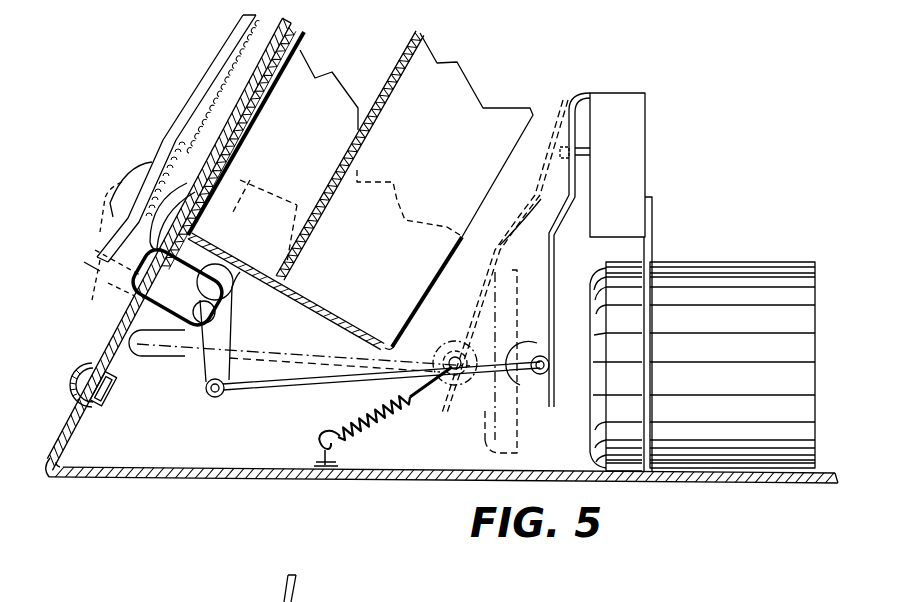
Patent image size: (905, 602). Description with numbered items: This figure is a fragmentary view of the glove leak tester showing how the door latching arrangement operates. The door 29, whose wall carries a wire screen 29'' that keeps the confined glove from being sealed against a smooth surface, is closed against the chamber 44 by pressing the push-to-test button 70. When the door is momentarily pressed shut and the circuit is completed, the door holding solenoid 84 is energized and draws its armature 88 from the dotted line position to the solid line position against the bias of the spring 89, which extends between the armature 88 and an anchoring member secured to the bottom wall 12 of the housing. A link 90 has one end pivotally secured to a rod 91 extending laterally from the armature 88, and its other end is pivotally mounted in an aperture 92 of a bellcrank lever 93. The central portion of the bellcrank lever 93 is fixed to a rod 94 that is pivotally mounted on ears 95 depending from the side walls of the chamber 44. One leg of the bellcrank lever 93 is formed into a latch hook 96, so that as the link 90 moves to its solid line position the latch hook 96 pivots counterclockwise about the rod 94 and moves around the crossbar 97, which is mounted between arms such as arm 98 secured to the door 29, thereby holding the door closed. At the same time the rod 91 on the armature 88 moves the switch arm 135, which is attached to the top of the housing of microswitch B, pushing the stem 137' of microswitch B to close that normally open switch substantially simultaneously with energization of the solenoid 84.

The bottom wall 12 is at (390, 474).
The door 29 is at (235, 108).
The wire screen 29'' is at (233, 130).
The chamber 44 is at (342, 128).
The push-to-test button 70 is at (110, 198).
The door holding solenoid 84 is at (752, 262).
The armature 88 is at (492, 413).
The spring 89 is at (382, 413).
The link 90 is at (283, 390).
The rod 91 is at (534, 352).
The aperture 92 is at (206, 395).
The bellcrank lever 93 is at (232, 333).
The rod 94 is at (228, 277).
The ears 95 is at (243, 278).
The latch hook 96 is at (185, 255).
The crossbar 97 is at (132, 300).
The arm 98 is at (107, 273).
The switch arm 135 is at (547, 232).
The stem 137' is at (603, 131).
The microswitch B is at (647, 127).